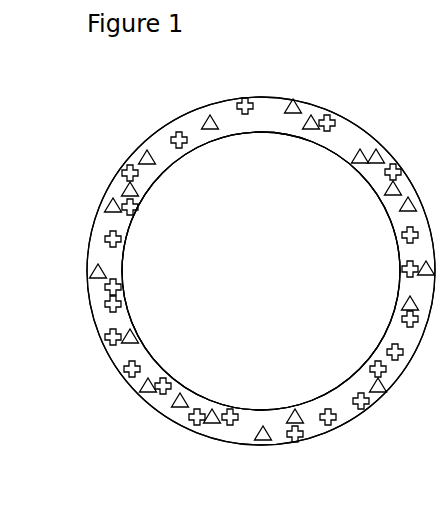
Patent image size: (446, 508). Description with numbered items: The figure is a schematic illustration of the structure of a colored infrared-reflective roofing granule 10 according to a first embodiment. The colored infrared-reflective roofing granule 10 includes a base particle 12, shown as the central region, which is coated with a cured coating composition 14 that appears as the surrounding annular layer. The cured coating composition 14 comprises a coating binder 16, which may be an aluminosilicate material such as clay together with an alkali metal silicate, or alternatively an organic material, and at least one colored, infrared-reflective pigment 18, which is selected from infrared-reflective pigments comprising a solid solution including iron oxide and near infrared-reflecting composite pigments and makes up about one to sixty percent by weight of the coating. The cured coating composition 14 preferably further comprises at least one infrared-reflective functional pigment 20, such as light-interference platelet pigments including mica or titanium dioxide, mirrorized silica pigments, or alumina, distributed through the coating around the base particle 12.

The colored infrared-reflective roofing granule 10 is at (132, 147).
The base particle 12 is at (270, 278).
The cured coating composition 14 is at (123, 183).
The coating binder 16 is at (107, 265).
The colored infrared-reflective pigment 18 is at (125, 342).
The infrared-reflective functional pigment 20 is at (123, 377).